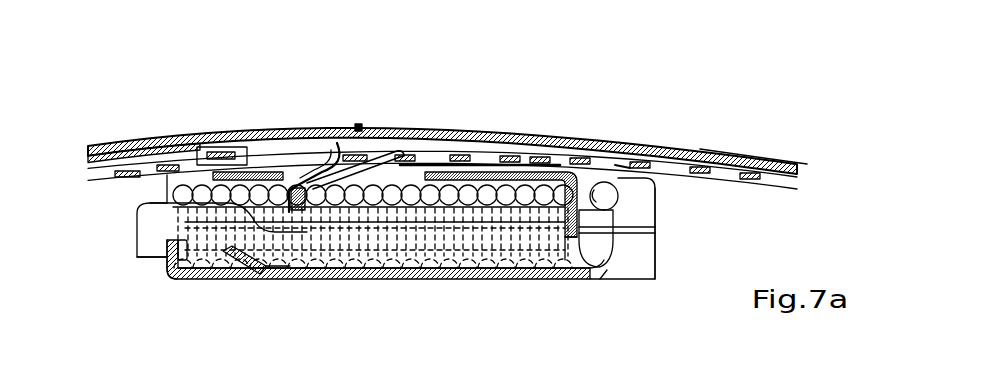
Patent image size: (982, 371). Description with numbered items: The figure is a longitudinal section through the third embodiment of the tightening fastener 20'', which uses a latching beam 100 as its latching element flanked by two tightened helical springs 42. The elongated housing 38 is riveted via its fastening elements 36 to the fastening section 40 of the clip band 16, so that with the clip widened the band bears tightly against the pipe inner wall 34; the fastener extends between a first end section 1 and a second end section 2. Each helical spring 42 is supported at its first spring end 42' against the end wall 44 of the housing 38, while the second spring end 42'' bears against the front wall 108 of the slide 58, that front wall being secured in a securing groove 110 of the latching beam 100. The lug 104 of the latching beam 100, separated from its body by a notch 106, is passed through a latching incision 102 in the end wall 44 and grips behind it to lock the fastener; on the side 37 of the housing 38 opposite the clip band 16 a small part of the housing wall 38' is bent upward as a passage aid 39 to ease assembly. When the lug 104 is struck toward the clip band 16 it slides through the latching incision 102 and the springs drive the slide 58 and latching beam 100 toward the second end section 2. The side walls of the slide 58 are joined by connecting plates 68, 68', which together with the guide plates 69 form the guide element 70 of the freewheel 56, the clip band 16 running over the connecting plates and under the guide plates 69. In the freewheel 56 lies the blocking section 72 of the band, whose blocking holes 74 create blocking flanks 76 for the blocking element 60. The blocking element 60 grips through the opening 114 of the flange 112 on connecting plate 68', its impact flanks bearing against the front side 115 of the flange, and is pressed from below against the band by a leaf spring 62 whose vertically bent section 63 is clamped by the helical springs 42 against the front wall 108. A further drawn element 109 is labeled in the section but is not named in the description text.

The first end section 1 is at (184, 95).
The second end section 2 is at (590, 93).
The clip band 16 is at (723, 157).
The tightening fastener 20'' is at (713, 279).
The pipe inner wall 34 is at (88, 150).
The fastening elements 36 is at (214, 130).
The side of the housing 37 is at (360, 285).
The housing 38 is at (465, 266).
The housing wall 38' is at (395, 251).
The passage aid 39 is at (243, 280).
The fastening section 40 is at (457, 143).
The helical spring 42 is at (373, 315).
The first spring end 42' is at (170, 286).
The second spring end 42'' is at (594, 286).
The end wall 44 is at (158, 270).
The freewheel 56 is at (318, 165).
The slide 58 is at (622, 178).
The blocking element 60 is at (303, 172).
The leaf spring 62 is at (438, 207).
The vertically bent section 63 is at (607, 278).
The connecting plate 68 is at (553, 106).
The connecting plate 68' is at (241, 107).
The guide plates 69 is at (372, 150).
The guide element 70 is at (359, 126).
The blocking section 72 is at (470, 160).
The blocking holes 74 is at (497, 147).
The blocking flanks 76 is at (433, 148).
The latching beam 100 is at (612, 243).
The latching incision 102 is at (167, 229).
The lug 104 is at (147, 231).
The notch 106 is at (180, 227).
The front wall 108 is at (657, 226).
The spring coil 109 is at (441, 281).
The securing groove 110 is at (558, 281).
The flange 112 is at (287, 277).
The opening 114 is at (293, 180).
The front side of the flange 115 is at (313, 283).